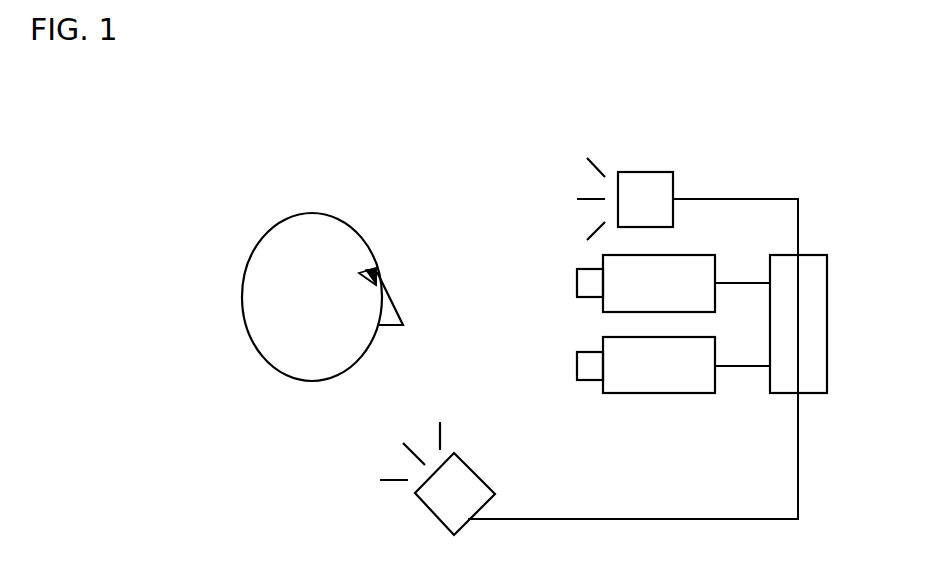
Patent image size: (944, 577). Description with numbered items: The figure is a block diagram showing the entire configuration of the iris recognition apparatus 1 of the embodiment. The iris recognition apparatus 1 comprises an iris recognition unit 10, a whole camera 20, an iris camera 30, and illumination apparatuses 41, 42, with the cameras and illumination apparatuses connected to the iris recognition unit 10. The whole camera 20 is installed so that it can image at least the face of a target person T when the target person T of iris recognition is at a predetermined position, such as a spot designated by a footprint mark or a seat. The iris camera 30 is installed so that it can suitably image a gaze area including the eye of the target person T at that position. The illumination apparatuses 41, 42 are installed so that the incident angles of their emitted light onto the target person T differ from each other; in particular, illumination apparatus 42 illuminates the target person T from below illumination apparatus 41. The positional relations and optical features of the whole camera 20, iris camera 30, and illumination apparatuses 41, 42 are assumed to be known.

The iris recognition apparatus 1 is at (744, 140).
The target person T is at (267, 252).
The iris recognition unit 10 is at (812, 255).
The whole camera 20 is at (690, 255).
The iris camera 30 is at (690, 393).
The illumination apparatus 41 is at (673, 183).
The illumination apparatus 42 is at (478, 473).